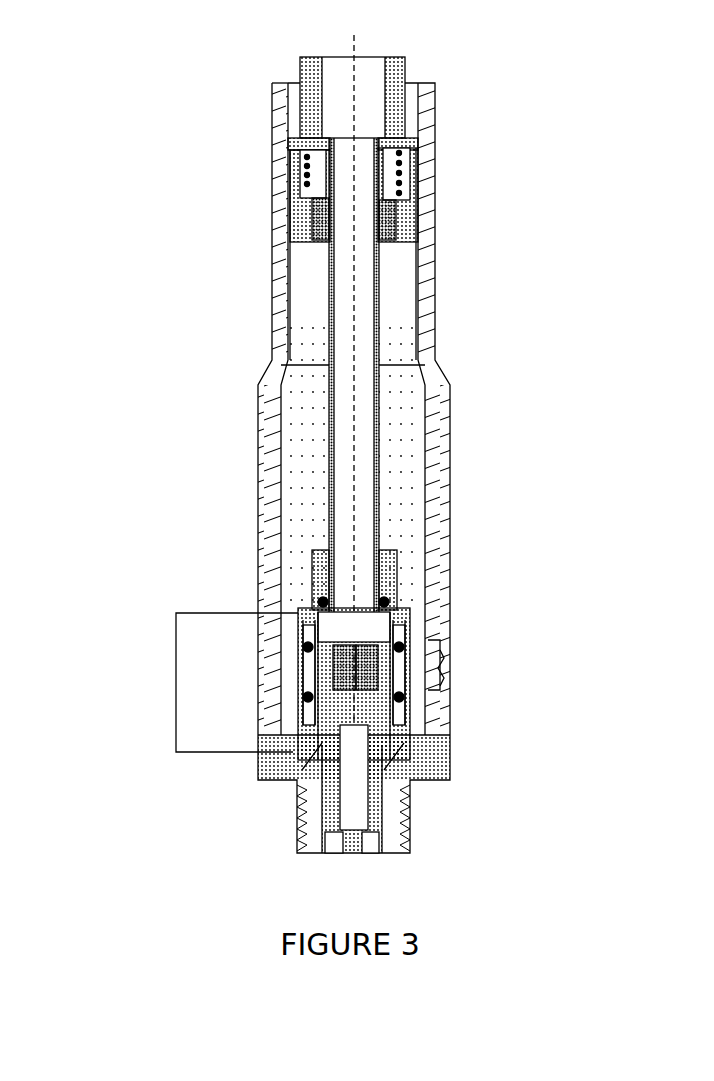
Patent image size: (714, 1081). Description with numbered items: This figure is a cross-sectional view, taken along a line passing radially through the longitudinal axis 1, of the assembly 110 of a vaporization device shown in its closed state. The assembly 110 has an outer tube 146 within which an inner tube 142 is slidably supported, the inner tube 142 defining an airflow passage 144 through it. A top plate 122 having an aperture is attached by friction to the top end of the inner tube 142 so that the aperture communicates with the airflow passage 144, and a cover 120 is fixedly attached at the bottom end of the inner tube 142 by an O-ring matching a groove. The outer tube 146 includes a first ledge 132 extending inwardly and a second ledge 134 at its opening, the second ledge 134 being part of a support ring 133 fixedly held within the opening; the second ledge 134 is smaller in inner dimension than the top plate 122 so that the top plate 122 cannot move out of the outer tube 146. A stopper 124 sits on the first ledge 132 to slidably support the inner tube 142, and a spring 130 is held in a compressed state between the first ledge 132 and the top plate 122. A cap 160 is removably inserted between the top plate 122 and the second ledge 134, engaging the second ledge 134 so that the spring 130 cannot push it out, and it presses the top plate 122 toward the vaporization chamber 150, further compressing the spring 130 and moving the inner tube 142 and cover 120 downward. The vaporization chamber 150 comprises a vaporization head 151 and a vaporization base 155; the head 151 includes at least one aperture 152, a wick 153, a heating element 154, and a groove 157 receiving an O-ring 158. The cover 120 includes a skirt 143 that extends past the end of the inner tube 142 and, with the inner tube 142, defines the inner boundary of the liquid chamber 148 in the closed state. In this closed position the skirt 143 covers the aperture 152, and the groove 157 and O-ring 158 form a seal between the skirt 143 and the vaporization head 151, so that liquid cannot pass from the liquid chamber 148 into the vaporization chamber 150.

The longitudinal axis 1 is at (356, 46).
The assembly 110 is at (545, 88).
The cover 120 is at (400, 580).
The top plate 122 is at (290, 146).
The stopper 124 is at (397, 221).
The spring 130 is at (303, 190).
The first ledge 132 is at (317, 207).
The support ring 133 is at (420, 118).
The second ledge 134 is at (296, 82).
The inner tube 142 is at (378, 282).
The skirt 143 is at (410, 696).
The airflow passage 144 is at (348, 464).
The outer tube 146 is at (428, 158).
The liquid chamber 148 is at (403, 436).
The vaporization chamber 150 is at (176, 684).
The vaporization head 151 is at (410, 625).
The aperture 152 is at (303, 668).
The wick 153 is at (300, 684).
The heating element 154 is at (320, 648).
The vaporization base 155 is at (447, 770).
The groove 157 is at (412, 664).
The O-ring 158 is at (367, 667).
The cap 160 is at (405, 72).